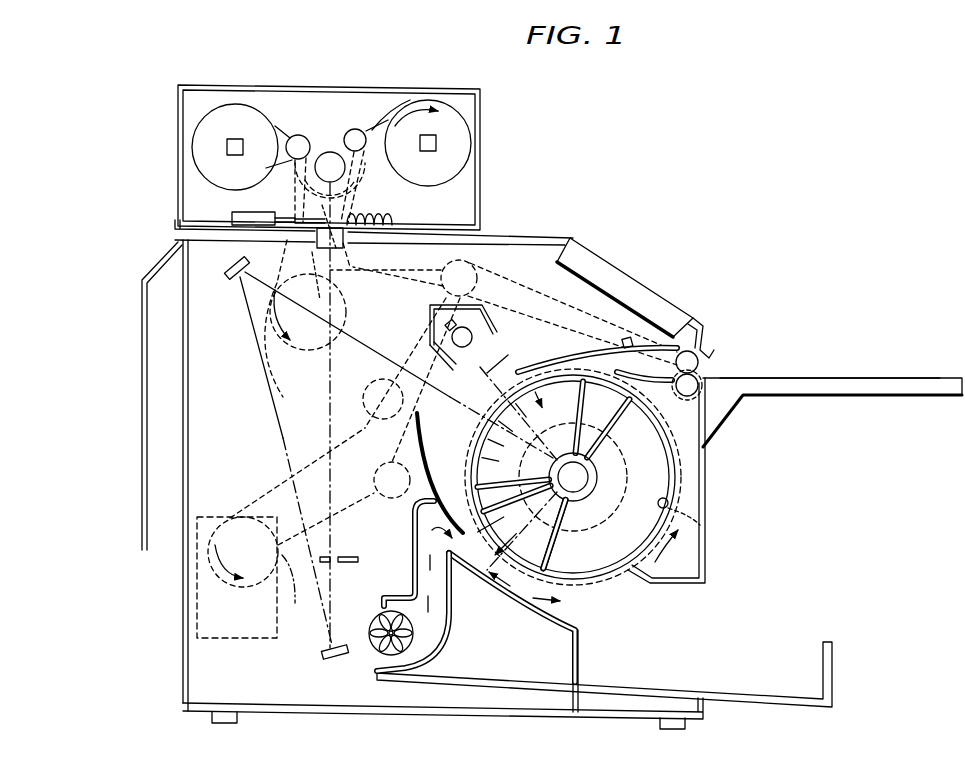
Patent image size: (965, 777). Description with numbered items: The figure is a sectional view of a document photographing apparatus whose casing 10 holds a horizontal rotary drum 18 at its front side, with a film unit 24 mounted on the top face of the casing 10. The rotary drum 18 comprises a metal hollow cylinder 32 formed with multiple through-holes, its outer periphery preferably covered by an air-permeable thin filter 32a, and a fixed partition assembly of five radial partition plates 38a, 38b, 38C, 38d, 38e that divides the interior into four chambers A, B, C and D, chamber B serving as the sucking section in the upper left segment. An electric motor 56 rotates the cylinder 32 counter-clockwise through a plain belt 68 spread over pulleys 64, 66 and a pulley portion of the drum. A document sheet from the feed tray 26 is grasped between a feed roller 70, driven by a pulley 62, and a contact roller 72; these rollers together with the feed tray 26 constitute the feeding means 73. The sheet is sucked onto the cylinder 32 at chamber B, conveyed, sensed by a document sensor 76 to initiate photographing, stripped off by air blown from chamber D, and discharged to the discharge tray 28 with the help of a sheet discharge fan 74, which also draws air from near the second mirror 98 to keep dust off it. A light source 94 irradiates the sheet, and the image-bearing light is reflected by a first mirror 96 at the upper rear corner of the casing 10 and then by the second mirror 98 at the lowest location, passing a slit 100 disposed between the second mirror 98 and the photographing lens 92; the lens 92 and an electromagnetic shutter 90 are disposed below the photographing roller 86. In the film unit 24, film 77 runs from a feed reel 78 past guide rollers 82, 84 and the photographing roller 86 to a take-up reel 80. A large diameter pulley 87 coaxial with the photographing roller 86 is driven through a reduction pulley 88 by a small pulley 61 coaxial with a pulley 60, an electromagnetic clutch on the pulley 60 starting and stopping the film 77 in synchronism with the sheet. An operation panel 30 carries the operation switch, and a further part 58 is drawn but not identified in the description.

The casing 10 is at (141, 410).
The rotary drum 18 is at (688, 482).
The film unit 24 is at (398, 87).
The document sheet feed tray 26 is at (918, 397).
The discharge tray 28 is at (832, 660).
The operation panel 30 is at (622, 268).
The metal hollow cylinder 32 is at (685, 504).
The air-permeable thin filter 32a is at (703, 528).
The radial partition plate 38a is at (610, 410).
The radial partition plate 38b is at (568, 385).
The radial partition plate 38C is at (465, 483).
The radial partition plate 38d is at (470, 545).
The radial partition plate 38e is at (553, 547).
The electric motor 56 is at (243, 640).
The toner path 58 is at (300, 593).
The pulley 60 is at (291, 351).
The small pulley 61 is at (300, 335).
The pulley 62 is at (440, 283).
The pulley 64 is at (364, 402).
The pulley 66 is at (373, 494).
The plain belt 68 is at (270, 490).
The feed roller 70 is at (700, 390).
The contact roller 72 is at (699, 364).
The means for feeding a document sheet 73 is at (798, 372).
The sheet discharge fan 74 is at (372, 655).
The document sensor 76 is at (632, 340).
The film 77 is at (386, 126).
The feed reel 78 is at (232, 105).
The take-up reel 80 is at (471, 132).
The guide roller 82 is at (289, 137).
The guide roller 84 is at (365, 128).
The photographing roller 86 is at (332, 151).
The large diameter pulley 87 is at (323, 133).
The reduction pulley 88 is at (290, 208).
The electromagnetic shutter 90 is at (230, 215).
The photographing lens 92 is at (347, 245).
The light source 94 is at (430, 340).
The first reflector or mirror 96 is at (232, 280).
The second reflector or mirror 98 is at (333, 660).
The slit 100 is at (350, 560).